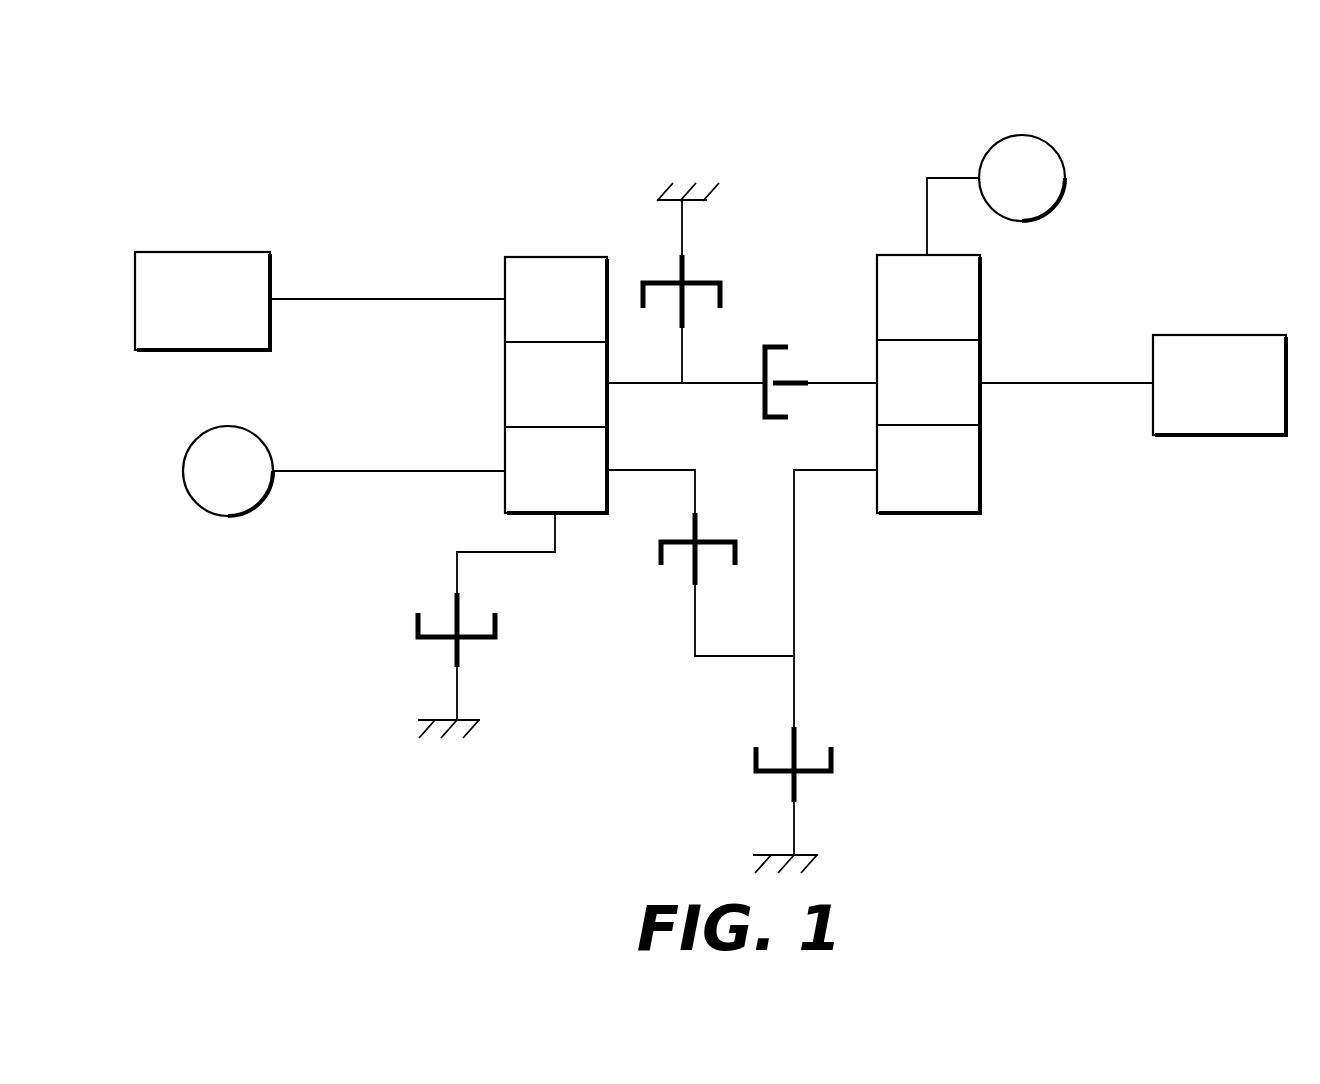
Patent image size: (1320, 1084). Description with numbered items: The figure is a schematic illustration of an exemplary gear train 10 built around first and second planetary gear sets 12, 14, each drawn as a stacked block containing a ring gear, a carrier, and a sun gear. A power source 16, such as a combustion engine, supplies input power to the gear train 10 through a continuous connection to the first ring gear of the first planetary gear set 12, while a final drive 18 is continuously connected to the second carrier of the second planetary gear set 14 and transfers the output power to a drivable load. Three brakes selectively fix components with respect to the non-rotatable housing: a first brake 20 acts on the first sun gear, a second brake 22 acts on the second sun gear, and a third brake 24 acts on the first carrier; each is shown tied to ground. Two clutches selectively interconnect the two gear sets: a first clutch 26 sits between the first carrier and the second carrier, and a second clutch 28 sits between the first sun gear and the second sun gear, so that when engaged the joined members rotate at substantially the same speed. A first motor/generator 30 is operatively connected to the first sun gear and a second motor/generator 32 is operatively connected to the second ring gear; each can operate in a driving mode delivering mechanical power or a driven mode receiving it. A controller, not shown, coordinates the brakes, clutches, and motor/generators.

The gear train 10 is at (1205, 172).
The first planetary gear set 12 is at (500, 240).
The second planetary gear set 14 is at (887, 215).
The power source 16 is at (272, 342).
The final drive 18 is at (1208, 436).
The first brake 20 is at (402, 628).
The second brake 22 is at (732, 771).
The third brake 24 is at (736, 262).
The first clutch 26 is at (810, 324).
The second clutch 28 is at (670, 587).
The first motor/generator 30 is at (218, 515).
The second motor/generator 32 is at (1020, 222).